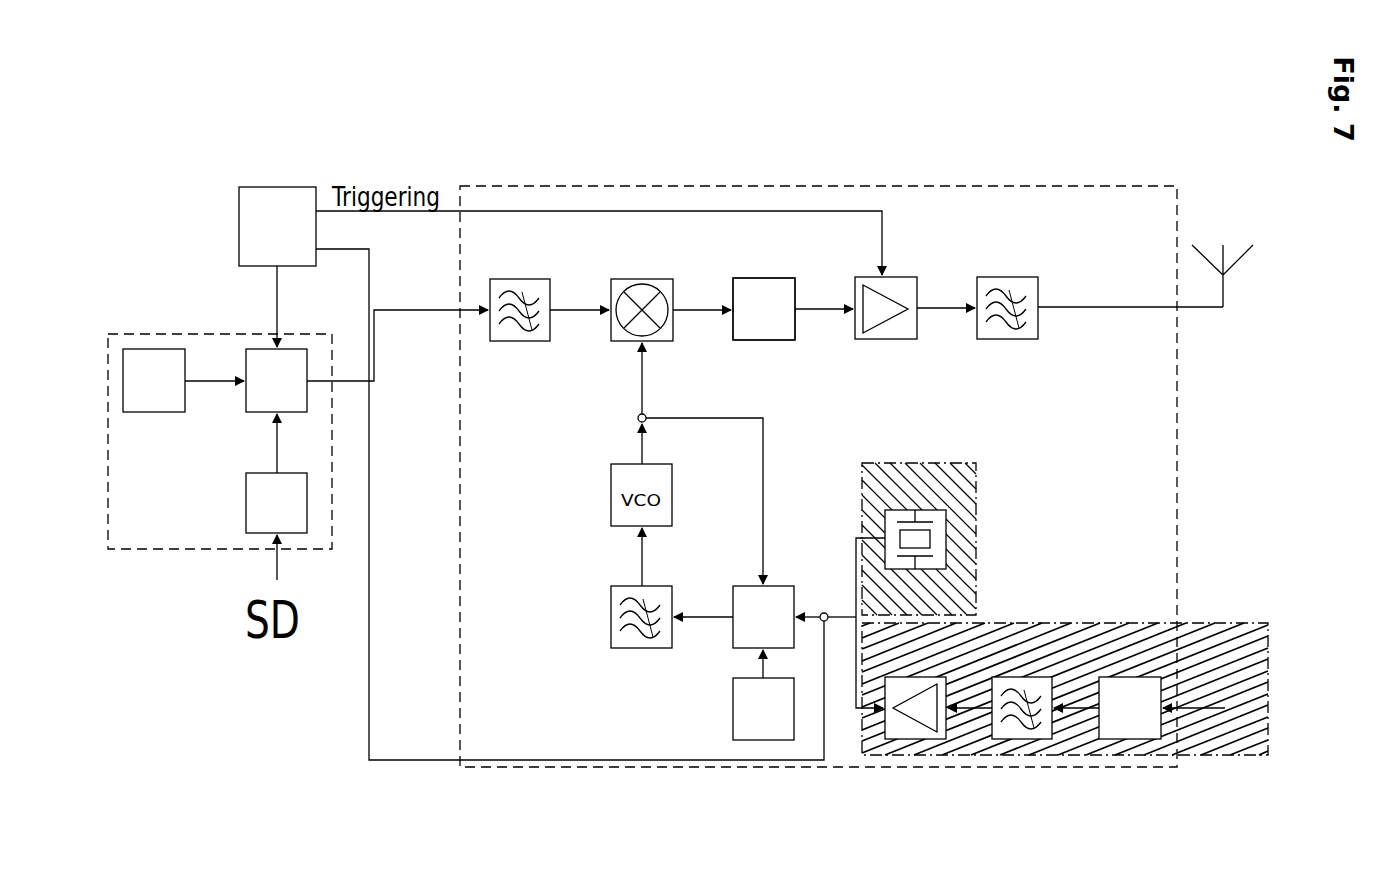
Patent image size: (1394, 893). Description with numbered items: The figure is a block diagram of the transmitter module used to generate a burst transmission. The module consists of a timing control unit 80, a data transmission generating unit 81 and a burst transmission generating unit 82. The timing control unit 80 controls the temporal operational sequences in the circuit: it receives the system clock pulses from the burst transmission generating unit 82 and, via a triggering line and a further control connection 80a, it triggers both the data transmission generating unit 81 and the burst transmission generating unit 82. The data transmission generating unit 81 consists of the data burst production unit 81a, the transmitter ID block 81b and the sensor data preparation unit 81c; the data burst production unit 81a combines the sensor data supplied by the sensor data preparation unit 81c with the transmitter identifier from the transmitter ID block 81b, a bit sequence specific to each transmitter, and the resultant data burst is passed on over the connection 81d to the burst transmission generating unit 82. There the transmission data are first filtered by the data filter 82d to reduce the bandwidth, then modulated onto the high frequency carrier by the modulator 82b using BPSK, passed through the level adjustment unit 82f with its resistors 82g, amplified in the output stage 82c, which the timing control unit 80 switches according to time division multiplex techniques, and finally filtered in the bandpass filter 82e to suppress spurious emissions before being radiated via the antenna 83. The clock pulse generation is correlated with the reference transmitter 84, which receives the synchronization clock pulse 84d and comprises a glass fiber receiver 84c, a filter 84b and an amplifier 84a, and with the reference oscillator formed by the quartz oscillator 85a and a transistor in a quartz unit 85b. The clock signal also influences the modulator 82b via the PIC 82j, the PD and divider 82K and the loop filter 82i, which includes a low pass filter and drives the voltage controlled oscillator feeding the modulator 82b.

The timing control unit 80 is at (277, 267).
The control line 80a is at (343, 242).
The data transmission generating unit 81 is at (175, 328).
The data burst production unit 81a is at (276, 384).
The transmitter ID block 81b is at (183, 384).
The sensor data preparation unit 81c is at (276, 478).
The modulated signal line 81d is at (397, 324).
The burst transmission generating unit 82 is at (553, 186).
The modulator 82b is at (645, 278).
The output stage 82c is at (886, 245).
The data filter 82d is at (528, 279).
The bandpass filter 82e is at (1040, 292).
The level adjustment unit 82f is at (793, 309).
The resistors 82g is at (764, 309).
The loop filter 82i is at (610, 618).
The PD & Divider 82K is at (765, 619).
The PIC 82j is at (766, 740).
The antenna 83 is at (1230, 282).
The reference transmitter 84 is at (1136, 620).
The amplifier 84a is at (905, 737).
The receiver filter 84b is at (1035, 737).
The glass fiber receiver 84c is at (1153, 802).
The synchronization clock pulse 84d is at (1213, 708).
The quartz oscillator 85a is at (920, 490).
The quartz unit 85b is at (935, 585).